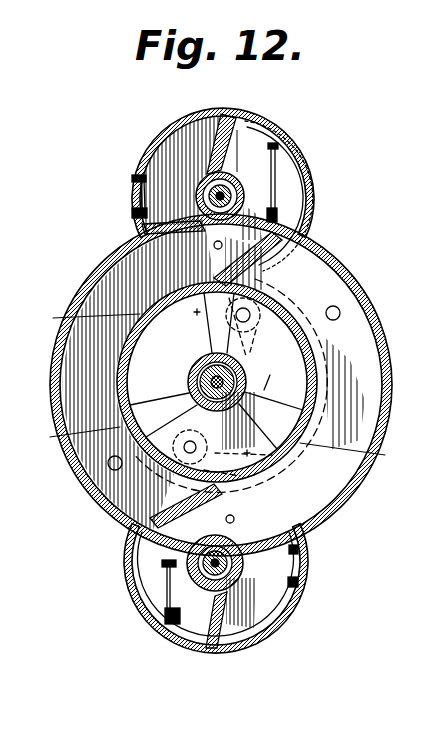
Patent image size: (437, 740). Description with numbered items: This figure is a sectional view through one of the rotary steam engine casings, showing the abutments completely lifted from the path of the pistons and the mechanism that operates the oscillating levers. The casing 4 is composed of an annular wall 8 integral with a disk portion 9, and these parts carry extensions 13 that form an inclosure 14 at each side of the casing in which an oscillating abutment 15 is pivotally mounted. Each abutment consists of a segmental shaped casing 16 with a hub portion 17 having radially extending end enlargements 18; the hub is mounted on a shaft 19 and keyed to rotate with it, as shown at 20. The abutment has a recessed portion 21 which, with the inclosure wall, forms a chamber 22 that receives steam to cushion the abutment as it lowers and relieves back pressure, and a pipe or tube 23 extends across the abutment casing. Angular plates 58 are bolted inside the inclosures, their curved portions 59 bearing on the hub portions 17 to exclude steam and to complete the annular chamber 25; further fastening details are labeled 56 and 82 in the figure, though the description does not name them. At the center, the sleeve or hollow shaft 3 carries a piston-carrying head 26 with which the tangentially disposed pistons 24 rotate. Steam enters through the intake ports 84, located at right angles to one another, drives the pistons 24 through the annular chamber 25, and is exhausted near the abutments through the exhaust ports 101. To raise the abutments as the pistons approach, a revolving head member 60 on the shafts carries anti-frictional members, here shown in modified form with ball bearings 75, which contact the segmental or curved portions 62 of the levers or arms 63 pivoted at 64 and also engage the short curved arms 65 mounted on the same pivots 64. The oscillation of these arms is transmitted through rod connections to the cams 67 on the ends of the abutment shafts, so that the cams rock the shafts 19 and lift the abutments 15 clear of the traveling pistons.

The sleeve or hollow shaft 3 is at (240, 372).
The casing 4 is at (390, 403).
The annular wall 8 is at (237, 517).
The disk portion 9 is at (86, 404).
The extension 13 is at (173, 143).
The casing or inclosure 14 is at (193, 133).
The oscillating abutment 15 is at (243, 133).
The segmental shaped casing 16 is at (290, 210).
The hub portion 17 is at (196, 185).
The radially extending end enlargement 18 is at (246, 188).
The shaft 19 is at (250, 196).
The key 20 is at (258, 175).
The recessed portion 21 is at (160, 637).
The chamber 22 is at (312, 197).
The pipe or tube 23 is at (275, 147).
The piston 24 is at (273, 258).
The annular chamber 25 is at (140, 300).
The piston-carrying head 26 is at (320, 377).
The bolt 56 is at (134, 200).
The angular plate 58 is at (300, 560).
The curved portion 59 is at (140, 232).
The revolving head member 60 is at (308, 530).
The segmental or curved portion 62 is at (312, 327).
The lever or arm 63 is at (216, 447).
The pivot 64 is at (360, 483).
The short curved arm 65 is at (212, 330).
The cam 67 is at (197, 192).
The ball bearings 75 is at (262, 302).
The key 82 is at (256, 386).
The port or intake 84 is at (224, 245).
The exhaust port 101 is at (340, 311).